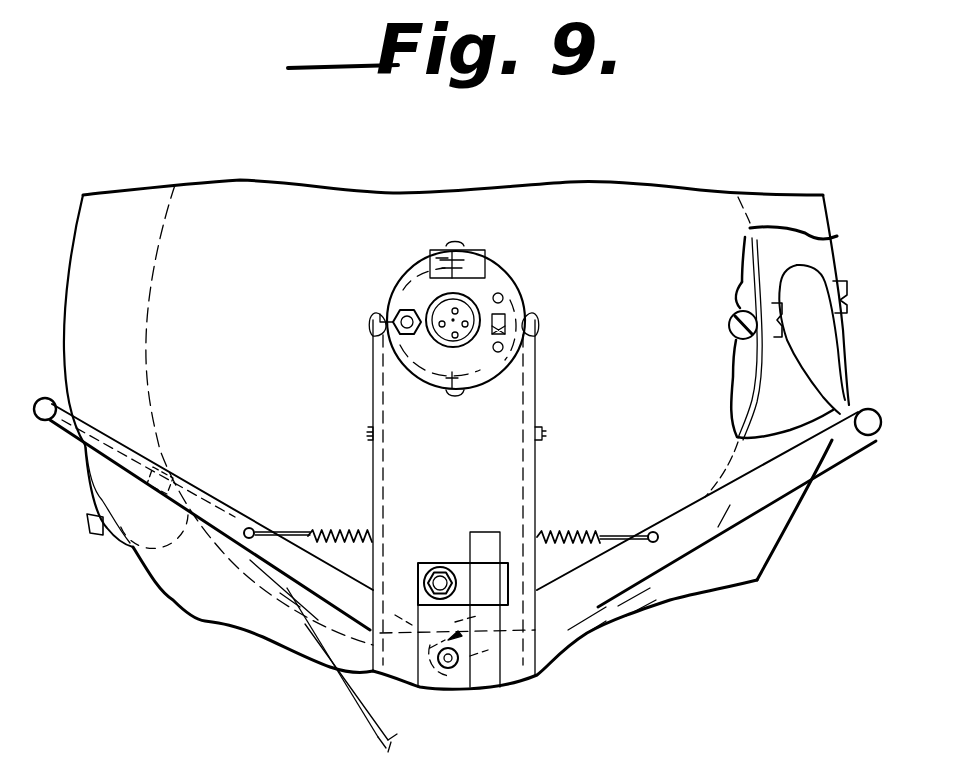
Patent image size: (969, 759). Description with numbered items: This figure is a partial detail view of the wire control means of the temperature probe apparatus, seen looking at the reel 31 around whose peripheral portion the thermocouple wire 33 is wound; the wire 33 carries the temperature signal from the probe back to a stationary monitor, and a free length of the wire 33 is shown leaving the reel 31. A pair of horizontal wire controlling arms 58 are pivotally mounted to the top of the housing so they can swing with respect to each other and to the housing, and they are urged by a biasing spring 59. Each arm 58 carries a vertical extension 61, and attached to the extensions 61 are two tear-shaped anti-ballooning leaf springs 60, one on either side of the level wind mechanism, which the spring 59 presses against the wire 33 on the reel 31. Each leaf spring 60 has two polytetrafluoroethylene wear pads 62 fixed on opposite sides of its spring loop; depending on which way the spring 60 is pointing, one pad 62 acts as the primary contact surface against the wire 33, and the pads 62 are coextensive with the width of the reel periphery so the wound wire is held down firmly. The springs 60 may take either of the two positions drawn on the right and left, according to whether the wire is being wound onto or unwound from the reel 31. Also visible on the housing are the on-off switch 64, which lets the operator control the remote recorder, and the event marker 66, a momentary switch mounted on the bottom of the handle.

The reel 31 is at (757, 556).
The thermocouple wire 33 is at (342, 690).
The wire controlling arms 58 is at (223, 520).
The spring 59 is at (562, 540).
The leaf springs 60 is at (88, 492).
The vertical extensions 61 is at (38, 420).
The wear pads 62 is at (103, 537).
The on-off switch 64 is at (510, 310).
The event marker 66 is at (405, 312).